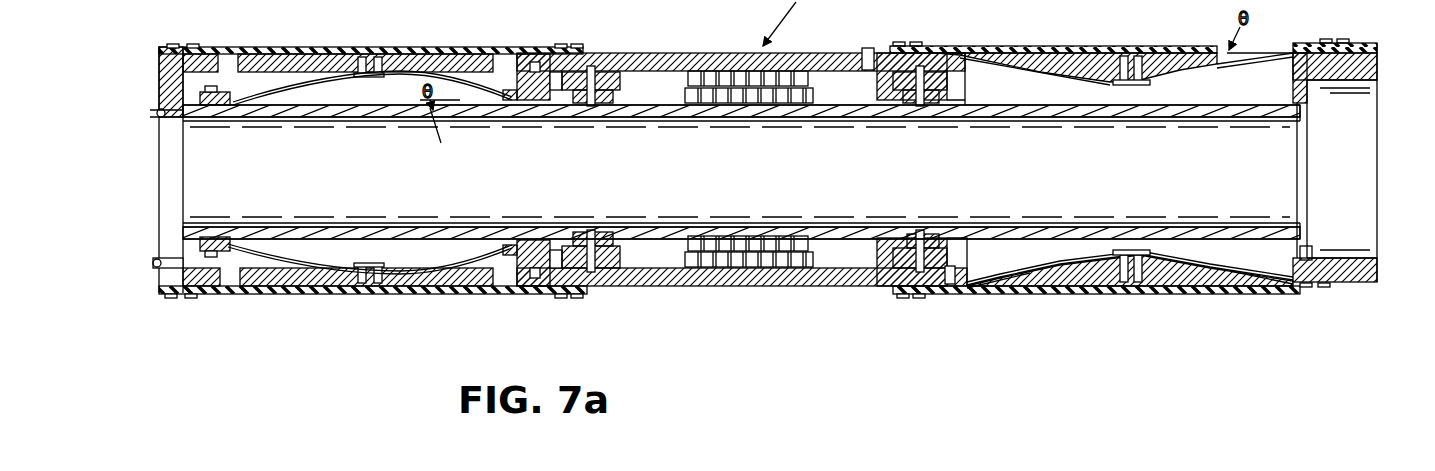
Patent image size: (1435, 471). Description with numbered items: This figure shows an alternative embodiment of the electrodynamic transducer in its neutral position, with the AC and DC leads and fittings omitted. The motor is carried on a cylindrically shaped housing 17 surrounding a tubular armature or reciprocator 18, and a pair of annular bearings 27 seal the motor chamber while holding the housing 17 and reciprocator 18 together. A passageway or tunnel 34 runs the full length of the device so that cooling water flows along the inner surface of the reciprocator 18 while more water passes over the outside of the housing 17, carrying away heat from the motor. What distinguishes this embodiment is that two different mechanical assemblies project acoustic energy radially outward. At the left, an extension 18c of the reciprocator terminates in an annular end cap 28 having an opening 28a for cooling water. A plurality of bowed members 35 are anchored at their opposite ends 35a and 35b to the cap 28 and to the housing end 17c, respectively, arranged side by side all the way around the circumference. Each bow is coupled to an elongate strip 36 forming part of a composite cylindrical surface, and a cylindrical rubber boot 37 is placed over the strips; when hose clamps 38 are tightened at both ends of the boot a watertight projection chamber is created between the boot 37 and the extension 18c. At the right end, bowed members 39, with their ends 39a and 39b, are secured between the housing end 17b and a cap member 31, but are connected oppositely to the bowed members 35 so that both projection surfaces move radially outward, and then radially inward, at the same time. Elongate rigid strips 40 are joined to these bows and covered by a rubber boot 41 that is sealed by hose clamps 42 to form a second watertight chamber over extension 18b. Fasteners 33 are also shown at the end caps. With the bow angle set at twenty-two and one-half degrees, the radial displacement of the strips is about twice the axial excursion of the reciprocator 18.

The housing 17 is at (672, 53).
The housing end 17b is at (890, 57).
The housing end 17c is at (560, 57).
The reciprocator 18 is at (845, 115).
The extension 18b is at (1225, 113).
The extension 18c is at (350, 118).
The annular bearing 27 is at (620, 88).
The annular end cap 28 is at (158, 72).
The opening 28a is at (160, 127).
The cap member 31 is at (1377, 68).
The fastening bolt 33 is at (862, 48).
The passageway 34 is at (768, 173).
The bowed member 35 is at (307, 77).
The bowed member end 35a is at (237, 104).
The bowed member end 35b is at (492, 100).
The elongate strip 36 is at (330, 54).
The rubber boot 37 is at (455, 47).
The hose clamp 38 is at (178, 44).
The bowed member 39 is at (1048, 263).
The spring plate end 39a is at (995, 285).
The spring plate end 39b is at (1280, 282).
The elongate rigid strip 40 is at (1075, 288).
The rubber boot 41 is at (1140, 50).
The hose clamp 42 is at (905, 42).